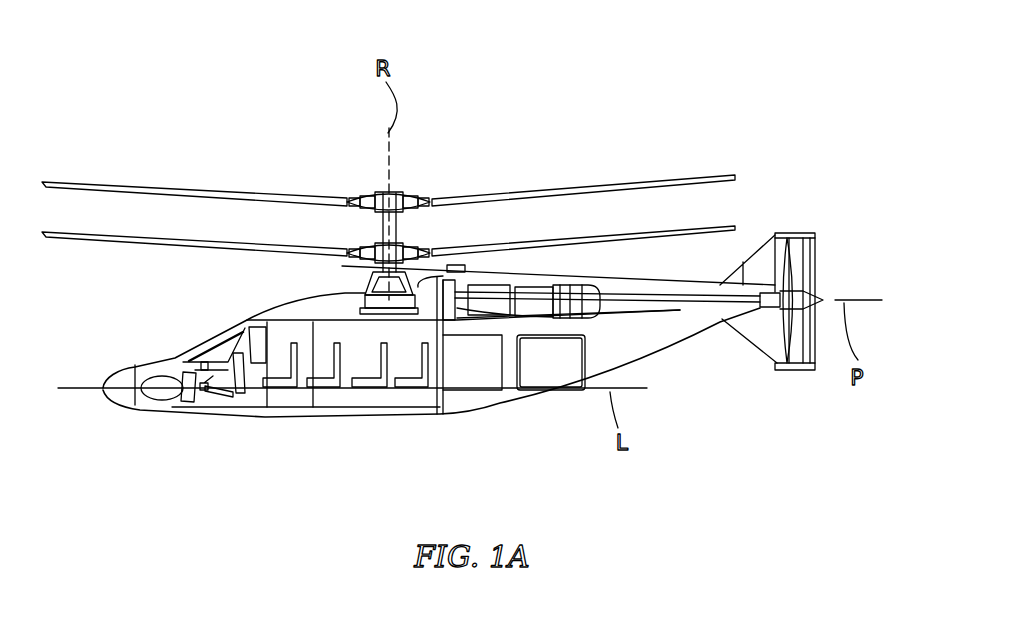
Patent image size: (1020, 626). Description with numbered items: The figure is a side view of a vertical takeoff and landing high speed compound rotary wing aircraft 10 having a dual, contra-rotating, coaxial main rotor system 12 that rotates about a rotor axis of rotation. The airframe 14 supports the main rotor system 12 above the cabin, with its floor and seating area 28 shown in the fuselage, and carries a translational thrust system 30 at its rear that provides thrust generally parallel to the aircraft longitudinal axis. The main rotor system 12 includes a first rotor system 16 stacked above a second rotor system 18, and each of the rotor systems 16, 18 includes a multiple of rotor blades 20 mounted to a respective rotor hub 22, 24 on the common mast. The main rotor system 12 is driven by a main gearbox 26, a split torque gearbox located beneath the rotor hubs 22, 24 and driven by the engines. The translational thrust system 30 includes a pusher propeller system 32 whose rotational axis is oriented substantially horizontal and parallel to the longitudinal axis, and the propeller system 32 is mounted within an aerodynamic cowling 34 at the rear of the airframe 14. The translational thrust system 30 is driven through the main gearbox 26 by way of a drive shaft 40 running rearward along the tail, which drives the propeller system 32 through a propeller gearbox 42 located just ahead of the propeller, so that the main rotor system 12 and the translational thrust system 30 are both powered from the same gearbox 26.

The rotary wing aircraft 10 is at (585, 104).
The main rotor system 12 is at (433, 188).
The airframe 14 is at (262, 311).
The first rotor system 16 is at (368, 189).
The second rotor system 18 is at (432, 244).
The rotor blades 20 is at (517, 191).
The rotor hub 22 is at (407, 192).
The rotor hub 24 is at (352, 245).
The main gearbox 26 is at (365, 292).
The cabin 28 is at (314, 403).
The translational thrust system 30 is at (825, 243).
The pusher propeller system 32 is at (791, 271).
The aerodynamic cowling 34 is at (786, 243).
The drive shaft 40 is at (684, 291).
The propeller gearbox 42 is at (770, 306).